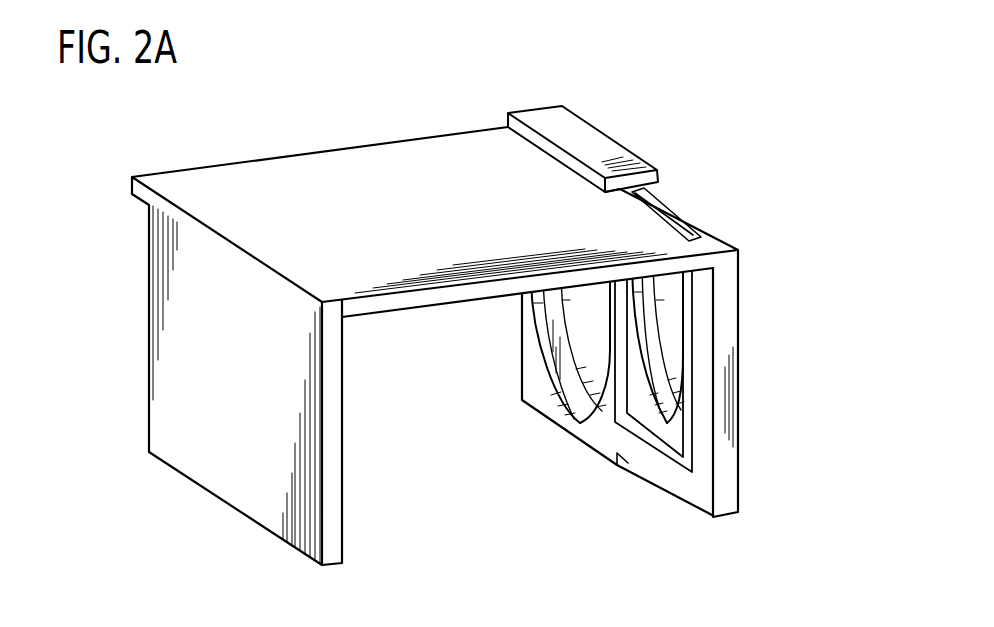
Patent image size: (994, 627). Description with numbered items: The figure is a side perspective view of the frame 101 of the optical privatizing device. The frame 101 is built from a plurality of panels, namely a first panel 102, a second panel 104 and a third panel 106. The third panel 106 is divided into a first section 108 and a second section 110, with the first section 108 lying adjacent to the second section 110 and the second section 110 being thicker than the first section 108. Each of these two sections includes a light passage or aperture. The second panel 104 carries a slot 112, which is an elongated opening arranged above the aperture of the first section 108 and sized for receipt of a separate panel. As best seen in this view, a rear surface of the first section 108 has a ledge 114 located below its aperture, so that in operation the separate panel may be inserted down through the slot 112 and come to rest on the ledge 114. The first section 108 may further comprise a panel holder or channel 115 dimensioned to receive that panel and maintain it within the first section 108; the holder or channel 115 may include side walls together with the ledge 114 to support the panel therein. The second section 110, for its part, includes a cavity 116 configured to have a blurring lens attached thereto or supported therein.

The frame 101 is at (722, 92).
The first panel 102 is at (249, 375).
The second panel 104 is at (446, 216).
The third panel 106 is at (739, 294).
The first section 108 is at (687, 527).
The second section 110 is at (584, 473).
The slot 112 is at (681, 227).
The ledge 114 is at (665, 448).
The panel holder or channel 115 is at (622, 367).
The cavity 116 is at (577, 402).